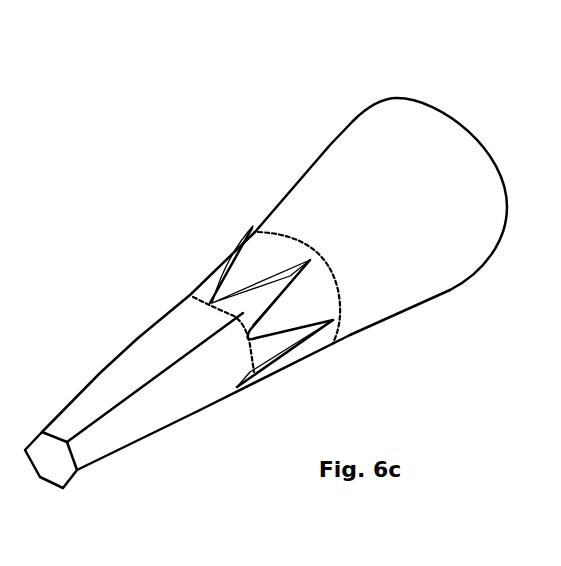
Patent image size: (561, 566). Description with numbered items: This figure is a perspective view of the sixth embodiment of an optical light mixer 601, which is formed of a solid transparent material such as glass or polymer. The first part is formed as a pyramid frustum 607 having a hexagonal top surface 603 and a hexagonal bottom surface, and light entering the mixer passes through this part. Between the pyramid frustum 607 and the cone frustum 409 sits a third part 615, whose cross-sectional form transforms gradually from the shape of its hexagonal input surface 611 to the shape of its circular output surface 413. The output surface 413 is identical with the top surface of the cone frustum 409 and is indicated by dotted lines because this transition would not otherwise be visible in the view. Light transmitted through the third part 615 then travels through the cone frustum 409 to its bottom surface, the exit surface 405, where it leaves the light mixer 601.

The optical light mixer 601 is at (172, 74).
The hexagonal top surface 603 is at (57, 458).
The pyramid frustum 607 is at (27, 386).
The third part 615 is at (138, 280).
The cone frustum 409 is at (222, 200).
The exit surface 405 is at (453, 117).
The output surface 413 is at (340, 306).
The input surface 611 is at (250, 362).